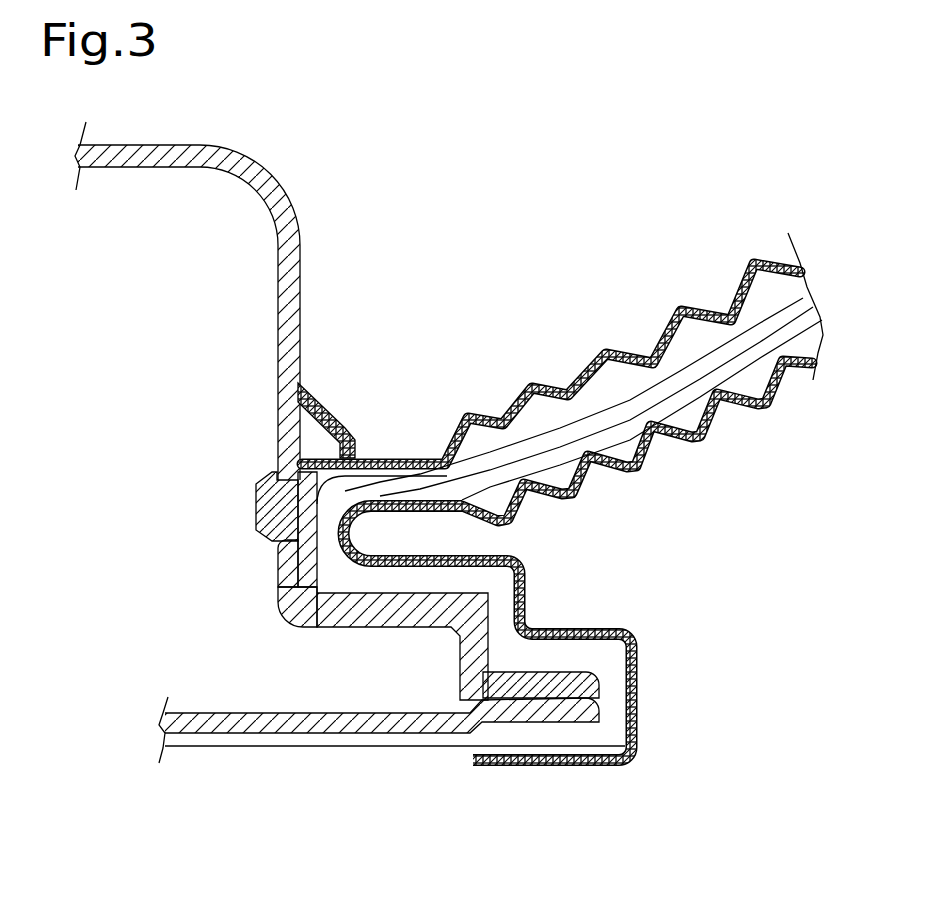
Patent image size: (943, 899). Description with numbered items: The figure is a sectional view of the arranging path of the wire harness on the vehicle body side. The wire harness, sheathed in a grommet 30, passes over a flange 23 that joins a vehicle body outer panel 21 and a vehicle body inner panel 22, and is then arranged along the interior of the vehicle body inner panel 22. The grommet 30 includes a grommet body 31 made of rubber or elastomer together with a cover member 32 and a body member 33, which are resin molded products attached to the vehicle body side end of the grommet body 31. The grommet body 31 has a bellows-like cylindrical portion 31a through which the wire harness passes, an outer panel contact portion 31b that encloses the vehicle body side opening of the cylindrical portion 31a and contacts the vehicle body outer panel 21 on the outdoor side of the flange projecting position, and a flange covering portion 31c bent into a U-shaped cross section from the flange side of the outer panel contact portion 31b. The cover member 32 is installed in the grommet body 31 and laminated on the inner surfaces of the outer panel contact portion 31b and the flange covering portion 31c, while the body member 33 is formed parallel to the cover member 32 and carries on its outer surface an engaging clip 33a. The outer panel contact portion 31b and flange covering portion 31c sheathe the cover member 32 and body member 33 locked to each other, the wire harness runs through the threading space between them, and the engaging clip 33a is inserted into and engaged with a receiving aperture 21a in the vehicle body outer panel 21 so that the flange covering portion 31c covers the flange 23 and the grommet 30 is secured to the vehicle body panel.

The vehicle body outer panel 21 is at (268, 186).
The receiving aperture 21a is at (280, 562).
The vehicle body inner panel 22 is at (403, 725).
The flange 23 is at (553, 708).
The grommet 30 is at (606, 338).
The grommet body 31 is at (735, 262).
The bellows-like cylindrical portion 31a is at (565, 386).
The outer panel contact portion 31b is at (352, 440).
The flange covering portion 31c is at (645, 672).
The cover member 32 is at (370, 570).
The body member 33 is at (298, 580).
The engaging clip 33a is at (256, 497).